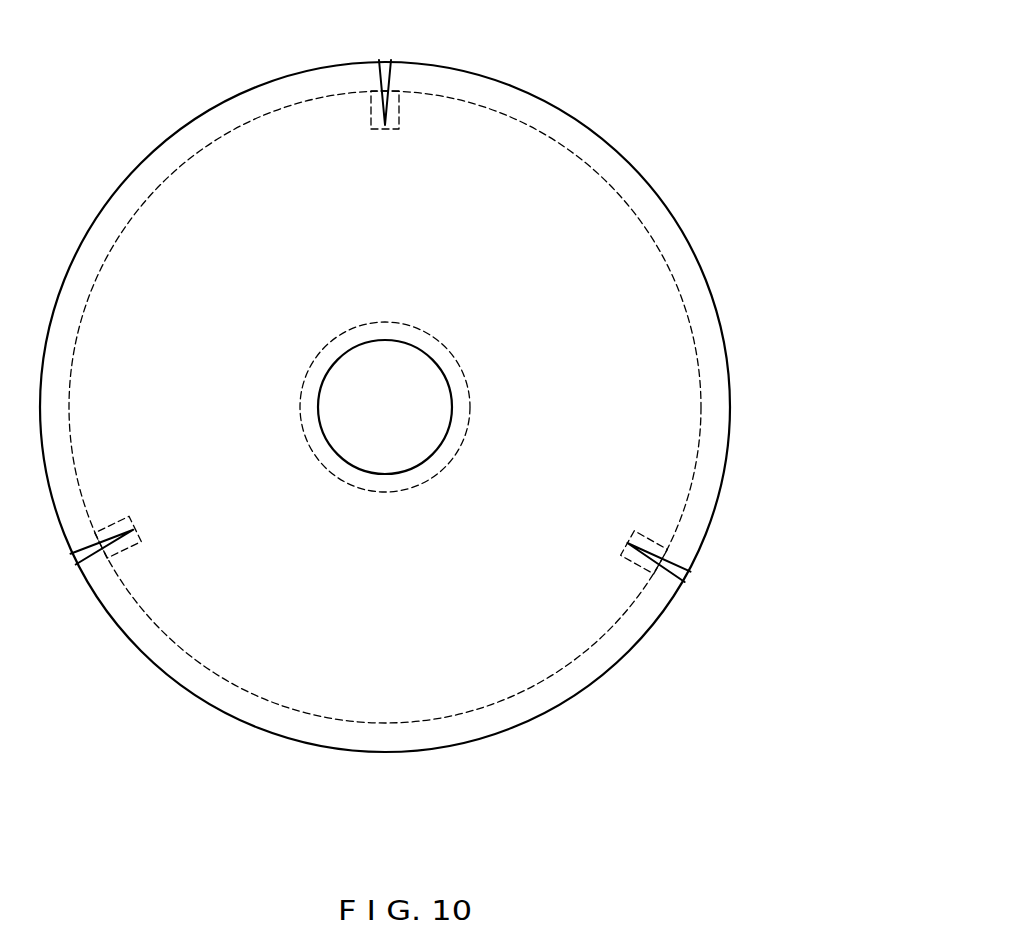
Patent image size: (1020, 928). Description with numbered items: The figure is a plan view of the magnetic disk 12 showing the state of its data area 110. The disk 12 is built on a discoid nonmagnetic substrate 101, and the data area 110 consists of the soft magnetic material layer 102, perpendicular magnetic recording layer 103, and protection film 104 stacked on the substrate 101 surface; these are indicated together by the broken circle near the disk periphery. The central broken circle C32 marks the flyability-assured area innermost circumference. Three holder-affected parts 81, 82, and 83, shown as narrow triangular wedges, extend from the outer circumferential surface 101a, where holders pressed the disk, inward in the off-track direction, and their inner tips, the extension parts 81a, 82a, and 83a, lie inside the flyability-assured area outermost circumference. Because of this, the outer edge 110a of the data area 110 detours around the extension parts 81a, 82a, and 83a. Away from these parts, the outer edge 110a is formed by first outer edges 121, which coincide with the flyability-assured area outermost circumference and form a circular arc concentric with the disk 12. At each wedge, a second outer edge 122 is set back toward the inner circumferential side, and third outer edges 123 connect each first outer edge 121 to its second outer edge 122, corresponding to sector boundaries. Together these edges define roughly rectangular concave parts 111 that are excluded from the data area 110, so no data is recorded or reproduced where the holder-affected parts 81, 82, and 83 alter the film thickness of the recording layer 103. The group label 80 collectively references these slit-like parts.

The magnetic disk 12 is at (590, 88).
The substrate 101 is at (629, 160).
The outer circumferential surface 101a is at (686, 221).
The data area 110 is at (648, 300).
The outer edge of the data area 110a is at (247, 118).
The soft magnetic material layer 102 is at (385, 407).
The perpendicular magnetic recording layer 103 is at (385, 407).
The protection film 104 is at (385, 407).
The first outer edge 121 is at (703, 397).
The flyability-assured area innermost circumference C32 is at (390, 493).
The slit 80 is at (382, 353).
The holder-affected part 81 is at (389, 84).
The holder-affected part 82 is at (670, 580).
The holder-affected part 83 is at (90, 560).
The extension part 81a is at (380, 103).
The extension part 82a is at (660, 542).
The extension part 83a is at (103, 531).
The concave part 111 is at (392, 102).
The second outer edge 122 is at (386, 131).
The third outer edge 123 is at (371, 128).